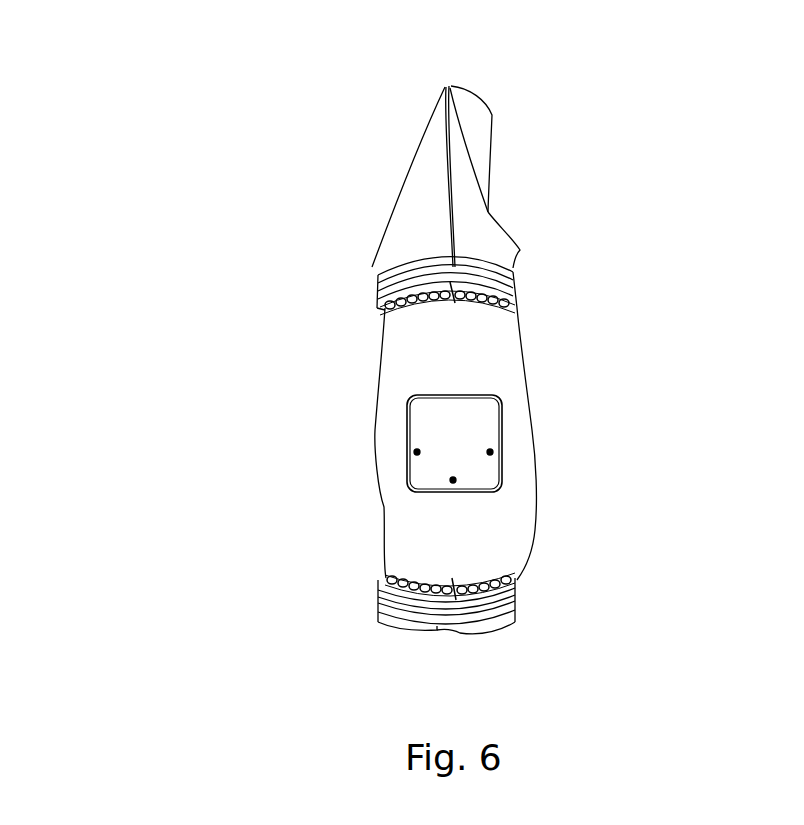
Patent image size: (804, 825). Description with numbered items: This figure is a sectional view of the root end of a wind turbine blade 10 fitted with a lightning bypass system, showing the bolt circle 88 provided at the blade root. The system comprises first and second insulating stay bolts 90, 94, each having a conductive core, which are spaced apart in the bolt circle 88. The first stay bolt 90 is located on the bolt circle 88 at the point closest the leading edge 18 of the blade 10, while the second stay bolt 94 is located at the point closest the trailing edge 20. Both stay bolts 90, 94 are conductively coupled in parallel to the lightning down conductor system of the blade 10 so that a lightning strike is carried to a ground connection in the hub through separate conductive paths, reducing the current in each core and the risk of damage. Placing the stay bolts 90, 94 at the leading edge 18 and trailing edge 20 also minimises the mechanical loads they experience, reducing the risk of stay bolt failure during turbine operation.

The wind turbine blade 10 is at (217, 222).
The leading edge 18 is at (458, 637).
The trailing edge 20 is at (455, 82).
The bolt circle 88 is at (513, 303).
The first insulating stay bolt 90 is at (450, 583).
The second insulating stay bolt 94 is at (447, 303).